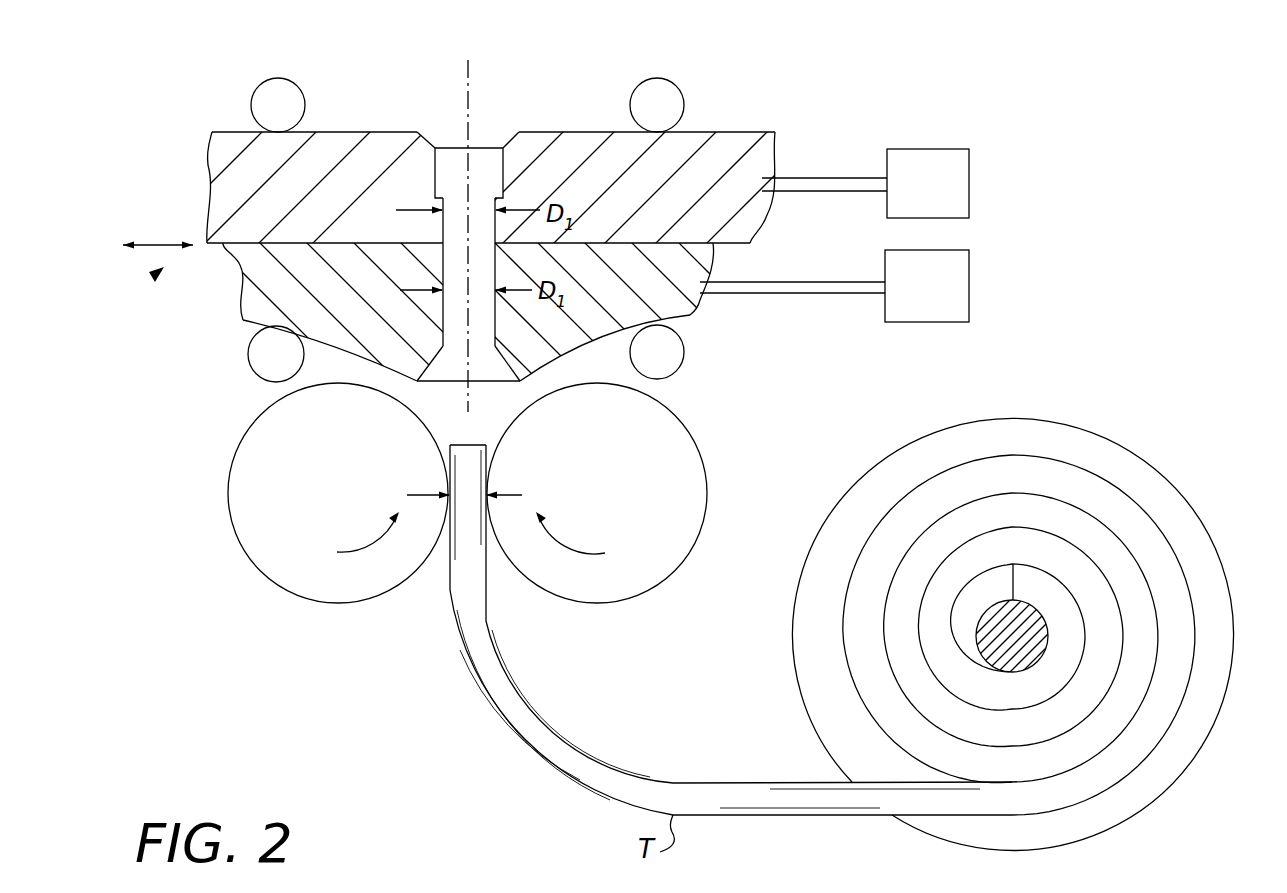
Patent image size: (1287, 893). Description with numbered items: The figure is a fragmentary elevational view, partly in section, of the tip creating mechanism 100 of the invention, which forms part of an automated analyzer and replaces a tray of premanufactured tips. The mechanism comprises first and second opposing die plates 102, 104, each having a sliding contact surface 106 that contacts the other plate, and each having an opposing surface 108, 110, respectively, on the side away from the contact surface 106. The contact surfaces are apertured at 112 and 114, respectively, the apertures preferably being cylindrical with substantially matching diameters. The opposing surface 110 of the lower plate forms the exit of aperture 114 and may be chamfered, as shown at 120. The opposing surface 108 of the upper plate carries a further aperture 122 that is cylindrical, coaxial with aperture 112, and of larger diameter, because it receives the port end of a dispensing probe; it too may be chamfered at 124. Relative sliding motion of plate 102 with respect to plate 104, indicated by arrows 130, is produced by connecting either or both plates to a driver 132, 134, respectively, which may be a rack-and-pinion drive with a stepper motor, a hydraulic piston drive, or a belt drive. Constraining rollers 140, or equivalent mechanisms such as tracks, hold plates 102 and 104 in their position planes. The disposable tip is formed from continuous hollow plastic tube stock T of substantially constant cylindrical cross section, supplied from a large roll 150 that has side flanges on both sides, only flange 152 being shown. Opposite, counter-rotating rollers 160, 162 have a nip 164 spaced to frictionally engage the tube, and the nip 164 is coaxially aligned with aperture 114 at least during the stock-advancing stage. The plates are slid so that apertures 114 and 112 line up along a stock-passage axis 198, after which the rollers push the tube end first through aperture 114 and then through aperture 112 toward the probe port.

The mechanism 100 is at (150, 275).
The first die plate 102 is at (212, 150).
The second die plate 104 is at (250, 285).
The sliding contact surface 106 is at (746, 241).
The opposing surface 108 is at (366, 132).
The opposing surface 110 is at (365, 356).
The aperture 112 is at (478, 212).
The aperture 114 is at (486, 328).
The chamfer 120 is at (436, 382).
The aperture 122 is at (503, 157).
The chamfer 124 is at (436, 133).
The arrows 130 is at (165, 243).
The driver 132 is at (952, 190).
The driver 134 is at (952, 285).
The constraining rollers 140 is at (257, 100).
The roll 150 is at (858, 808).
The flange 152 is at (1156, 488).
The roller 160 is at (312, 597).
The roller 162 is at (626, 588).
The nip 164 is at (512, 494).
The stock-passage axis 198 is at (470, 67).